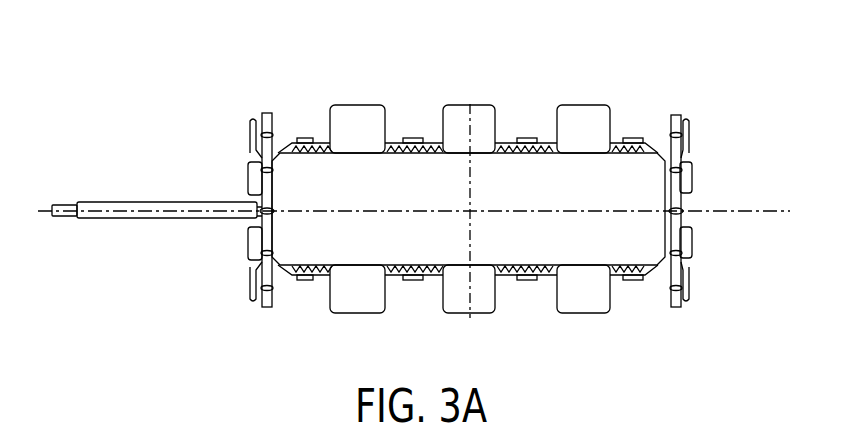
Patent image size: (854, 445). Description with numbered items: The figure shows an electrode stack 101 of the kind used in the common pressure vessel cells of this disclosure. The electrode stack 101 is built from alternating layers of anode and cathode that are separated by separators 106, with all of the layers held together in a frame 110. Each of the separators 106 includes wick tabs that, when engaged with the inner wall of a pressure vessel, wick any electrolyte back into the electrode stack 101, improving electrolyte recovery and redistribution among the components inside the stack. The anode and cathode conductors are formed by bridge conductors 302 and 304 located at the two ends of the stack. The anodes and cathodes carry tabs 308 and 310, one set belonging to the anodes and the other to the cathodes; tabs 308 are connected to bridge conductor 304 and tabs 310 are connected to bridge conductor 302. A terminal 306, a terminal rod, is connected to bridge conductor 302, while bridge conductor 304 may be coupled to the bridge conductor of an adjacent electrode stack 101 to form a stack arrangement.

The electrode stack 101 is at (352, 185).
The separators 106 is at (565, 112).
The frame 110 is at (420, 254).
The bridge conductor 302 is at (253, 300).
The bridge conductor 304 is at (677, 305).
The terminal 306 is at (138, 200).
The tabs 308 is at (692, 170).
The tabs 310 is at (252, 183).